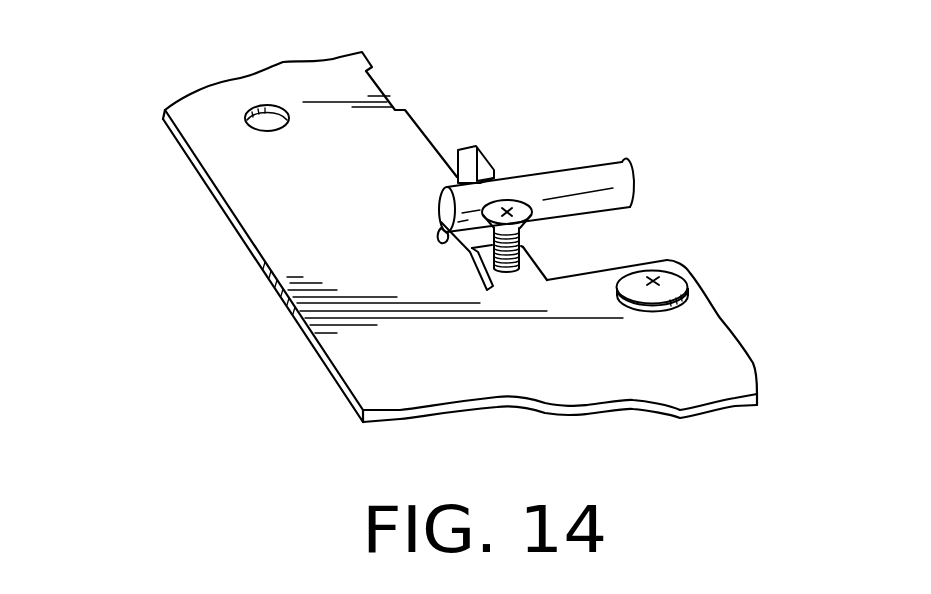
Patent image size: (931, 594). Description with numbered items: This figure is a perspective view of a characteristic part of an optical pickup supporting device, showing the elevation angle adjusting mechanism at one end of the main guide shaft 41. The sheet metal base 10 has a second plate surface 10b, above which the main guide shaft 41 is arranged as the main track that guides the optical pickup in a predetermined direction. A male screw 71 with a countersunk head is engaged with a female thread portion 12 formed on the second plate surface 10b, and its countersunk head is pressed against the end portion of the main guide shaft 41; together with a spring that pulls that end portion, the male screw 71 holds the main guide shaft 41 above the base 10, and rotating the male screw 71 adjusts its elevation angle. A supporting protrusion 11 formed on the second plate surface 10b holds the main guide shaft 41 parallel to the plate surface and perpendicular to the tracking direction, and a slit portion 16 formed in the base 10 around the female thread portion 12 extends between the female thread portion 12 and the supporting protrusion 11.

The sheet metal base 10 is at (277, 228).
The second plate surface 10b is at (210, 120).
The supporting protrusion 11 is at (455, 170).
The female thread portion 12 is at (530, 252).
The slit portion 16 is at (475, 263).
The main guide shaft 41 is at (582, 178).
The male screw 71 is at (513, 270).